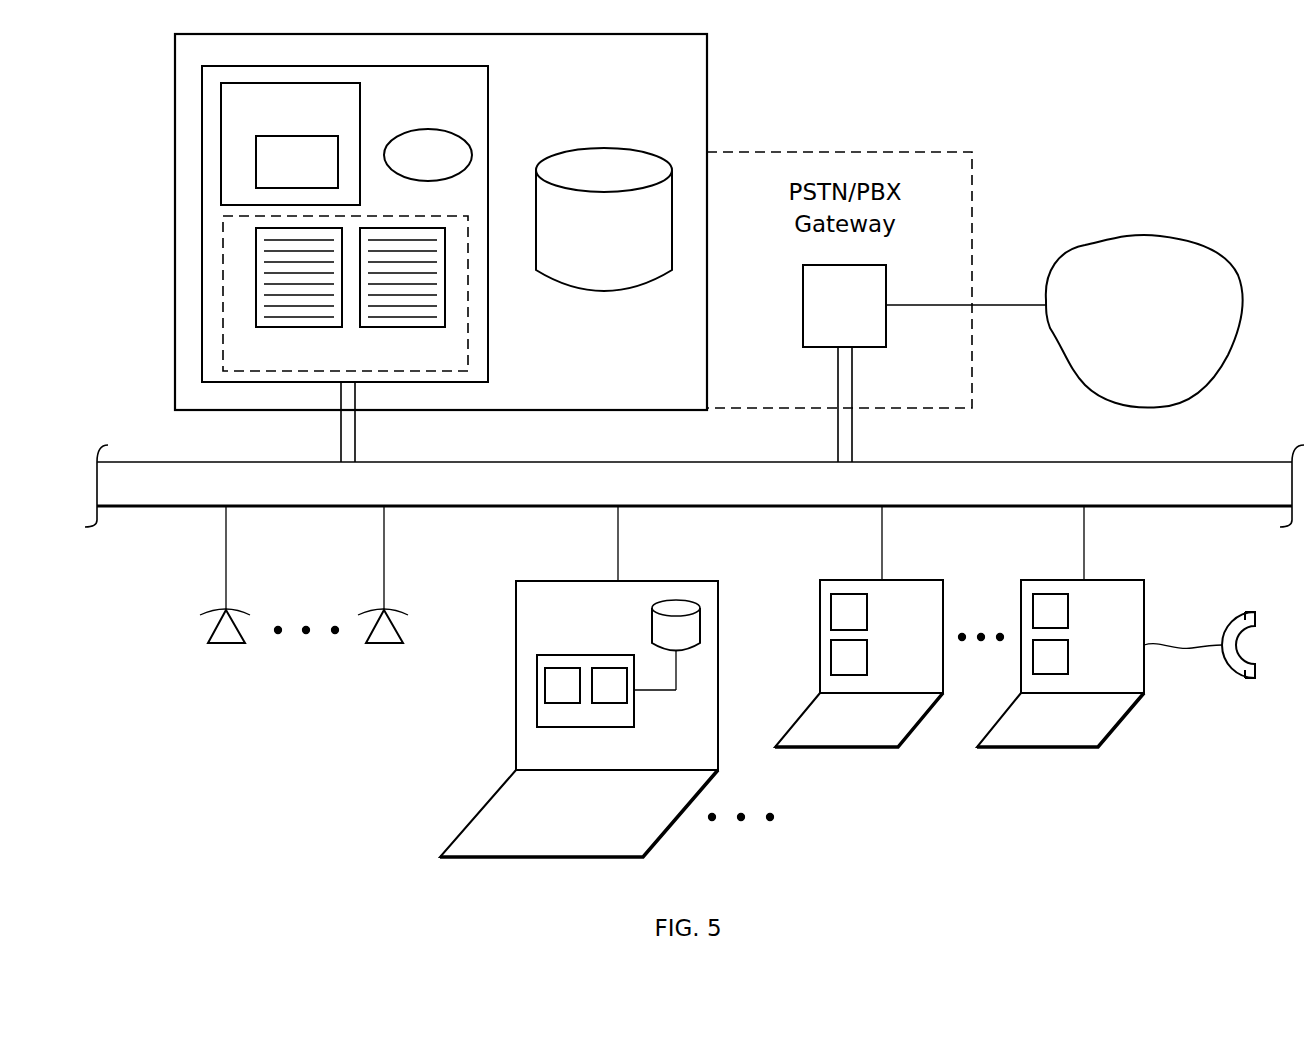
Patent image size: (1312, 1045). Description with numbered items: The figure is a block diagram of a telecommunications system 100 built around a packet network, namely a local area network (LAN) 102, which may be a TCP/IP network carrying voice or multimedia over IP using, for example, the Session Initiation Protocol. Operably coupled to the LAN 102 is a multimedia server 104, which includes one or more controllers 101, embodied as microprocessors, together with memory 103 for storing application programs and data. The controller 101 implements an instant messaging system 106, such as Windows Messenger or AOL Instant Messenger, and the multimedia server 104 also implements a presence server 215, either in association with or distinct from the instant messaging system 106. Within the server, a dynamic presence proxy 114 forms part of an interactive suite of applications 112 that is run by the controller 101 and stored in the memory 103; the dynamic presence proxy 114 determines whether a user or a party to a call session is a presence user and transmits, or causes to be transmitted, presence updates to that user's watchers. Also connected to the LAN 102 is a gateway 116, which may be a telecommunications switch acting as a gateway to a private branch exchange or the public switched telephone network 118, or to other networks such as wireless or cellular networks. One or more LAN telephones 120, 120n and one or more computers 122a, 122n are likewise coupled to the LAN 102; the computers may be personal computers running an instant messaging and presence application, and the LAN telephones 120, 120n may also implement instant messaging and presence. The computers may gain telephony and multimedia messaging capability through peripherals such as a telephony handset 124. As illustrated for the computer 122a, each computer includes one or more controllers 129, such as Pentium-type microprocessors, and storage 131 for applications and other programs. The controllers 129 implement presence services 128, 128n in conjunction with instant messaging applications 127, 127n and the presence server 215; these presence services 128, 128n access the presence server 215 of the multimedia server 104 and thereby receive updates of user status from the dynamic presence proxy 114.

The telecommunications system 100 is at (1172, 68).
The controller 101 is at (488, 96).
The local area network (LAN) 102 is at (239, 501).
The memory 103 is at (585, 250).
The multimedia server 104 is at (585, 376).
The instant messaging system 106 is at (289, 361).
The interactive suite of applications 112 is at (249, 119).
The dynamic presence proxy 114 is at (278, 174).
The gateway 116 is at (826, 318).
The public switched telephone network or private branch exchange 118 is at (1124, 380).
The LAN telephone 120 is at (228, 646).
The LAN telephone 120n is at (386, 646).
The computer 122a is at (579, 703).
The computer 122n is at (1060, 649).
The peripheral telephony handset 124 is at (1236, 616).
The instant messaging application 127 is at (608, 704).
The instant messaging application 127n is at (1055, 662).
The presence service 128 is at (566, 704).
The presence service 128n is at (1055, 618).
The controller 129 is at (590, 655).
The storage 131 is at (660, 628).
The presence server 215 is at (409, 168).